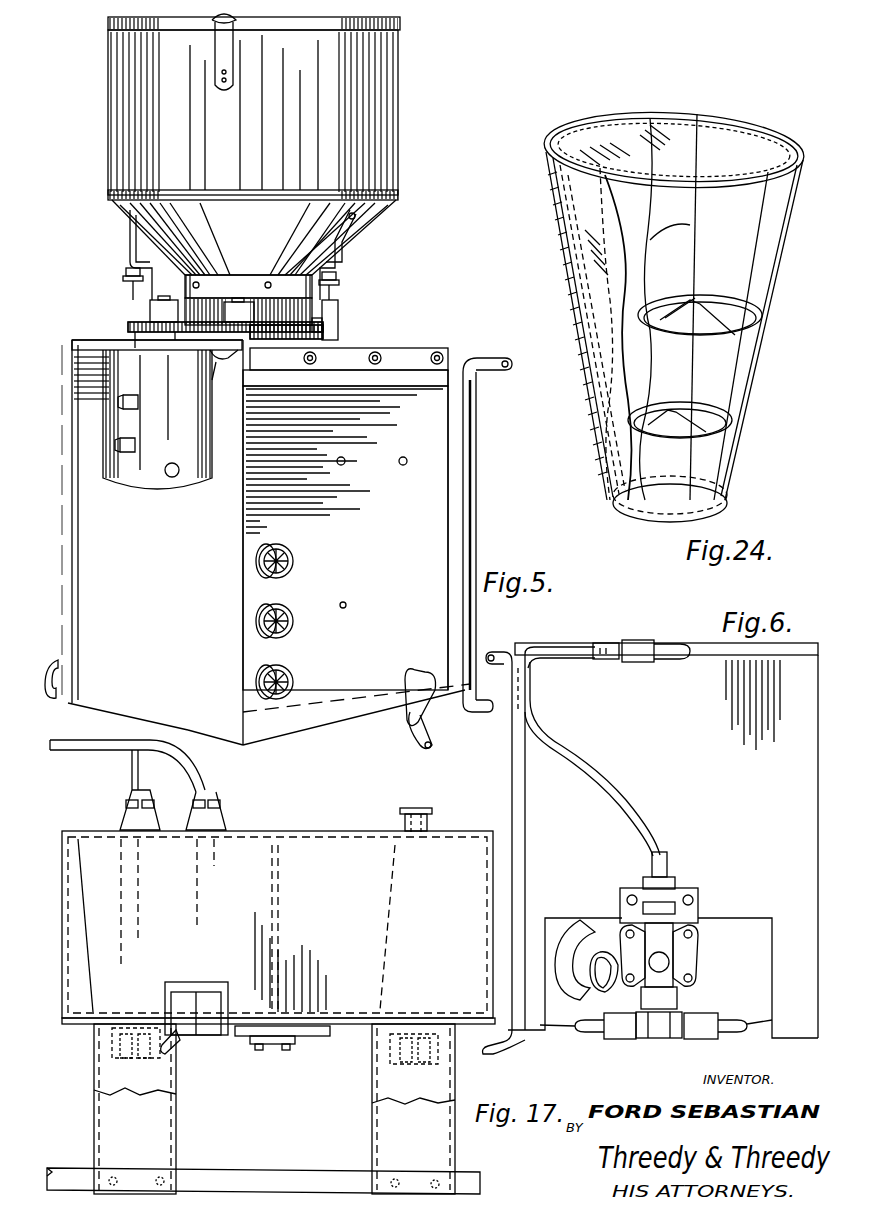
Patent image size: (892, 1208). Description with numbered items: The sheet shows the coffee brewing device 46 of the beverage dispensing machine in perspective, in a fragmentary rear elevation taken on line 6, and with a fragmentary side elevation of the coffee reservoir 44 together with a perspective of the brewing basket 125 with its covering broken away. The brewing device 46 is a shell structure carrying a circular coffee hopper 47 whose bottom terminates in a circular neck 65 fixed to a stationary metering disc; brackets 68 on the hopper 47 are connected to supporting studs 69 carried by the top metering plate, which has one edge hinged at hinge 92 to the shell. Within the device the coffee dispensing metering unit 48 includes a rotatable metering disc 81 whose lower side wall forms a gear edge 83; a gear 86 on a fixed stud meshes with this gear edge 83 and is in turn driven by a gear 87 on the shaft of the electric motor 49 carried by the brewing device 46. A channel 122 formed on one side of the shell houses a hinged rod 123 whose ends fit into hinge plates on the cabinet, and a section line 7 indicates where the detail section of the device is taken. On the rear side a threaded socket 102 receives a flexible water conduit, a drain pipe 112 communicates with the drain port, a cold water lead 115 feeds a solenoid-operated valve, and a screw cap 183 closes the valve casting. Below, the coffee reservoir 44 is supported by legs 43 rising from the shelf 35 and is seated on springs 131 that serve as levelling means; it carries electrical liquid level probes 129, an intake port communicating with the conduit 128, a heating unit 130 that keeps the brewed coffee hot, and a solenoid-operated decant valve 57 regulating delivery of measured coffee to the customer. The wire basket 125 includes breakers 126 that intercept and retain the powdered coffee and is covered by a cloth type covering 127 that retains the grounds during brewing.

In FIG. 5, the coffee hopper 47 is at (398, 147).
In FIG. 5, the brackets 68 is at (130, 240).
In FIG. 5, the supporting studs 69 is at (126, 282).
In FIG. 5, the circular neck 65 is at (190, 280).
In FIG. 5, the coffee dispensing metering unit 48 is at (279, 318).
In FIG. 5, the gear 87 is at (138, 322).
In FIG. 5, the gear 86 is at (338, 310).
In FIG. 5, the rotatable metering disc 81 is at (322, 322).
In FIG. 5, the gear edge 83 is at (323, 334).
In FIG. 5, the hinge 92 is at (404, 350).
In FIG. 5, the electric motor 49 is at (157, 419).
In FIG. 5, the coffee brewing device 46 is at (399, 574).
In FIG. 6, the coffee brewing device 46 is at (691, 766).
In FIG. 5, the channel 122 is at (478, 492).
In FIG. 6, the channel 122 is at (512, 798).
In FIG. 5, the hinged rod 123 is at (494, 358).
In FIG. 6, the hinged rod 123 is at (508, 652).
In FIG. 5, the section line 7— 7 is at (190, 740).
In FIG. 5, the section line 6— 6 is at (66, 340).
In FIG. 17, the electrical liquid level probes 129 is at (196, 815).
In FIG. 17, the coffee reservoir 44 is at (358, 929).
In FIG. 17, the conduit 128 is at (416, 808).
In FIG. 17, the solenoid-operated decant valve 57 is at (205, 1036).
In FIG. 17, the heating unit 130 is at (306, 1036).
In FIG. 17, the legs 43 is at (172, 1128).
In FIG. 17, the shelf 35 is at (250, 1170).
In FIG. 17, the springs 131 is at (105, 1052).
In FIG. 6, the threaded socket 102 is at (645, 642).
In FIG. 6, the screw cap 183 is at (698, 918).
In FIG. 6, the drain pipe 112 is at (578, 1000).
In FIG. 6, the cold water lead 115 is at (576, 1030).
In FIG. 24, the basket 125 is at (566, 284).
In FIG. 24, the breakers 126 is at (745, 303).
In FIG. 24, the cloth type covering 127 is at (674, 307).